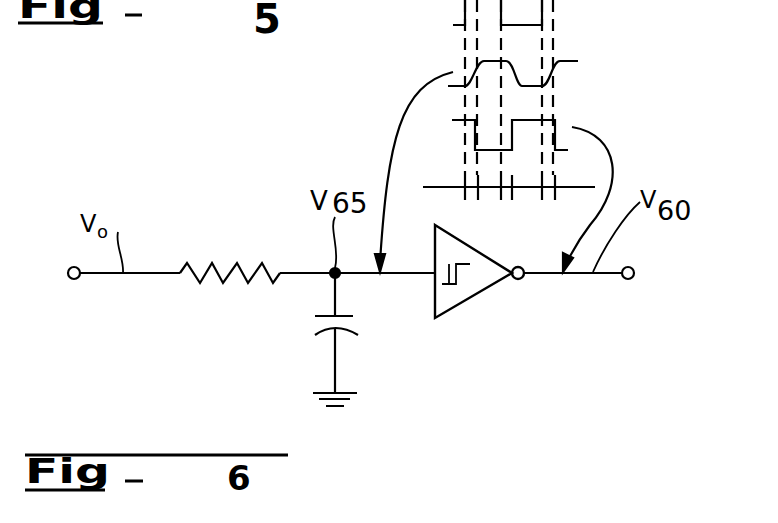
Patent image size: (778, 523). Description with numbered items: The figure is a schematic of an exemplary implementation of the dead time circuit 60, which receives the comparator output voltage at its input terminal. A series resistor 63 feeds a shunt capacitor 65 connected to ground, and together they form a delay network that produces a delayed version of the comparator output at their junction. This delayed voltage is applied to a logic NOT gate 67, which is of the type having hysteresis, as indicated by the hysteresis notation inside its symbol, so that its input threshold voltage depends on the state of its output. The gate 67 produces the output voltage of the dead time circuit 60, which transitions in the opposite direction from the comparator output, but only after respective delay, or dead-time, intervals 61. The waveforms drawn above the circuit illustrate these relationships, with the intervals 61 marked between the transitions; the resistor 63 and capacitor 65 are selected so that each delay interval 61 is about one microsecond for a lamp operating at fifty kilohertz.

The dead time circuit 60 is at (453, 12).
The delay interval 61 is at (468, 203).
The resistor 63 is at (240, 264).
The capacitor 65 is at (326, 331).
The logic NOT gate 67 is at (488, 287).